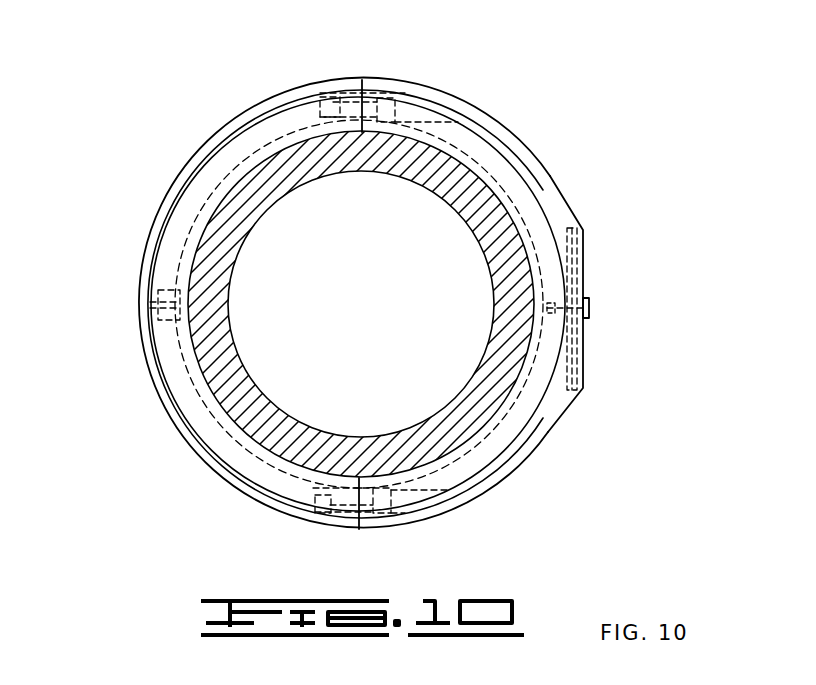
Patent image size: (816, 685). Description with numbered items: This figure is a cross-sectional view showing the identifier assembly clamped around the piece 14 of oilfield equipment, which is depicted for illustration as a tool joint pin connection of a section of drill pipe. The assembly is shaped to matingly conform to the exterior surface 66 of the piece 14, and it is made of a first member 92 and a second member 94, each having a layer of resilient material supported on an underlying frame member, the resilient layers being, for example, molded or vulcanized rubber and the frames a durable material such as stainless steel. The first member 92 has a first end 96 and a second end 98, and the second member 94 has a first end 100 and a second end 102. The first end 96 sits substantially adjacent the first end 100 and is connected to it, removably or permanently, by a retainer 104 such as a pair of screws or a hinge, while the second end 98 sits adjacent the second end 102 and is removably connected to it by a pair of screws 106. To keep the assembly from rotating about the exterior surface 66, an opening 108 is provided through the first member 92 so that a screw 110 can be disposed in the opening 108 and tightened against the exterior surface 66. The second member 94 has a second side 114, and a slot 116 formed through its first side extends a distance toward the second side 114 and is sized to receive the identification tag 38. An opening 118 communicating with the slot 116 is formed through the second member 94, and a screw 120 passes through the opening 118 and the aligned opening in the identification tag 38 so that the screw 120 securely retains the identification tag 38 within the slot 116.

The piece of oilfield equipment 14 is at (245, 171).
The identification tag 38 is at (582, 333).
The exterior surface 66 is at (483, 438).
The first member 92 is at (157, 397).
The second member 94 is at (510, 134).
The first end 96 is at (350, 80).
The second end 98 is at (345, 528).
The first end 100 is at (376, 97).
The second end 102 is at (380, 527).
The retainer 104 is at (334, 88).
The screws 106 is at (324, 508).
The opening 108 is at (156, 292).
The screw 110 is at (150, 306).
The second side 114 is at (565, 222).
The slot 116 is at (580, 253).
The opening 118 is at (584, 322).
The screw 120 is at (590, 308).